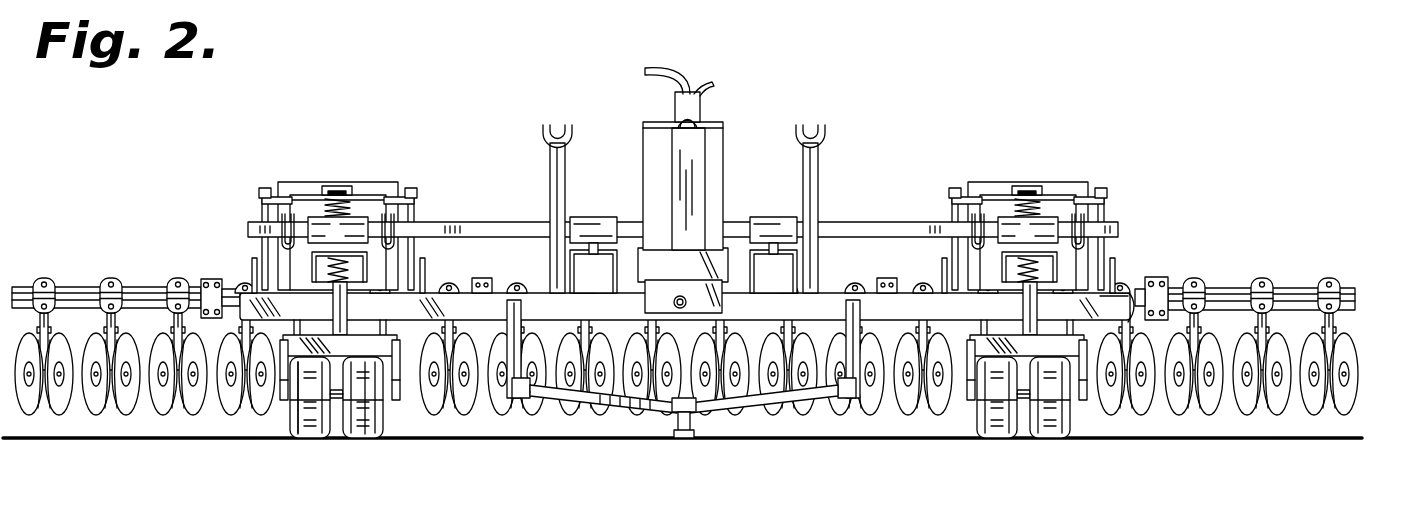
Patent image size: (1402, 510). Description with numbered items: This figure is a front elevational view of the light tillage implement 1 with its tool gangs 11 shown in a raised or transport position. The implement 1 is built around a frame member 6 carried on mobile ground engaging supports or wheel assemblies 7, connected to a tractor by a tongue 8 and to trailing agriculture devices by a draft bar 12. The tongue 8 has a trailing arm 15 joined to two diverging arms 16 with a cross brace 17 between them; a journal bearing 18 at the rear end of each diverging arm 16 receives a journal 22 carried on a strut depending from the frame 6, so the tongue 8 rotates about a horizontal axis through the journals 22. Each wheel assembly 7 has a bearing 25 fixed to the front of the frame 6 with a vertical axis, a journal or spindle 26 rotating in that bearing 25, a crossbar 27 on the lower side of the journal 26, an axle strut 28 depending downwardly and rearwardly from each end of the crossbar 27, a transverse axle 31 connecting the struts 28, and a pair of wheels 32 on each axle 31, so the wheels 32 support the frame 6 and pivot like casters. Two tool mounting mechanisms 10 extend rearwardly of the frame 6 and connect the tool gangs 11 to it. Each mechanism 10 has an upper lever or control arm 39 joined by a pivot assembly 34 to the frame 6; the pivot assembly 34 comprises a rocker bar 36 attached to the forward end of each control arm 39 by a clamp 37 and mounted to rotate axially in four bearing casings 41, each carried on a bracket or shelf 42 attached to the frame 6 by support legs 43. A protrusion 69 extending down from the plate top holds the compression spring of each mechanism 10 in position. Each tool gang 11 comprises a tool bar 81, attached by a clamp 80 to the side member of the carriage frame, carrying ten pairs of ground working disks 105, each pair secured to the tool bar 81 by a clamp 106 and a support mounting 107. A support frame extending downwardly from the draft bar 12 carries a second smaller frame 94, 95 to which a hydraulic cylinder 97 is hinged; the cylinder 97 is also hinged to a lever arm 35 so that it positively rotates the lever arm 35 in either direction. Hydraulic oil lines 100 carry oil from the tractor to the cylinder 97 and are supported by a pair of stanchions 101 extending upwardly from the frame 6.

The implement for light tillage 1 is at (495, 152).
The frame member 6 is at (1118, 298).
The mobile ground engaging supports 7 is at (378, 420).
The tongue 8 is at (778, 400).
The tool mounting mechanisms 10 is at (370, 182).
The ground working tool gangs 11 is at (152, 287).
The draft bar 12 is at (712, 228).
The trailing arm 15 is at (690, 432).
The diverging arms 16 is at (628, 410).
The cross brace 17 is at (700, 412).
The journal bearing 18 is at (513, 400).
The journal 22 is at (527, 400).
The bearing 25 is at (352, 308).
The journal or spindle 26 is at (336, 300).
The crossbar 27 is at (385, 342).
The axle strut 28 is at (282, 382).
The axle 31 is at (312, 428).
The wheels 32 is at (365, 432).
The pivot assembly 34 is at (638, 226).
The lever arm 35 is at (698, 160).
The rocker bar 36 is at (888, 222).
The clamp 37 is at (282, 226).
The control arm 39 is at (282, 212).
The bearing casings 41 is at (366, 235).
The bracket or shelf 42 is at (322, 254).
The support legs 43 is at (302, 276).
The protrusion 69 is at (338, 190).
The clamp 80 is at (1165, 278).
The tool bar 81 is at (68, 288).
The second smaller frame 94 is at (646, 126).
The smaller frame 95 is at (710, 98).
The hydraulic cylinder 97 is at (703, 120).
The hydraulic oil lines 100 is at (672, 80).
The stanchions 101 is at (566, 125).
The ground working disks 105 is at (93, 418).
The clamp 106 is at (97, 280).
The support mounting 107 is at (104, 321).